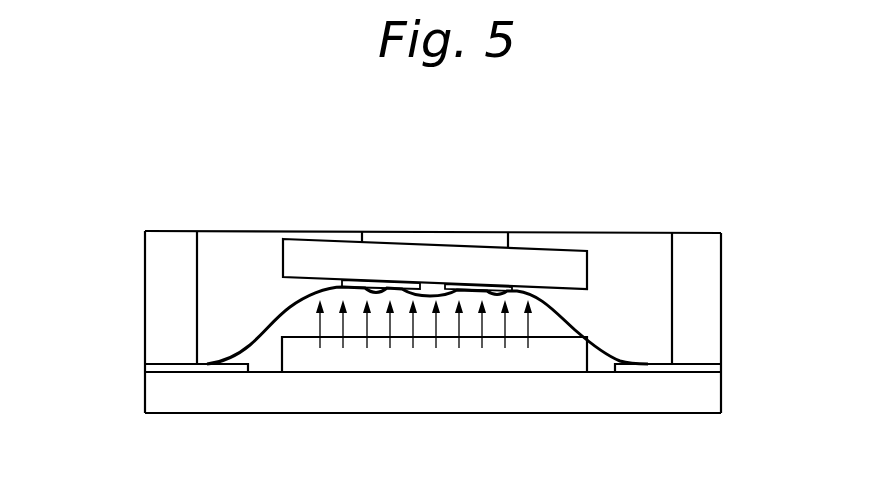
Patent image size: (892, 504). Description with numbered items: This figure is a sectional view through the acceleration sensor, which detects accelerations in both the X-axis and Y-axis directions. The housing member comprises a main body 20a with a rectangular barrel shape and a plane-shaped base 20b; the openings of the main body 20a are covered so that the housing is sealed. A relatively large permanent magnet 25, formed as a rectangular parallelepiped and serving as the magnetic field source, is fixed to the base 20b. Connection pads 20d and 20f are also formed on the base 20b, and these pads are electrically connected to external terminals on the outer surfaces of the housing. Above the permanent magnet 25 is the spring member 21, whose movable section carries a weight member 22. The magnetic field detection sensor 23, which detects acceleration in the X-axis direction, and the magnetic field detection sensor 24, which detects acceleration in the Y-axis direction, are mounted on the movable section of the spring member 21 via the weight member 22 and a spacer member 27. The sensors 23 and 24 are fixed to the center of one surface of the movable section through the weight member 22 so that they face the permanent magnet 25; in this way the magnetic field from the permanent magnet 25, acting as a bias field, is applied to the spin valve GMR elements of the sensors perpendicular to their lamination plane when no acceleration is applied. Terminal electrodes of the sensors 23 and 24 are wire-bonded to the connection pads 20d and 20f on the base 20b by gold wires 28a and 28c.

The main body 20a is at (157, 297).
The base 20b is at (674, 402).
The connection pad 20d is at (695, 368).
The connection pad 20f is at (157, 368).
The spring member 21 is at (590, 233).
The weight member 22 is at (566, 263).
The magnetic field detection sensor 23 is at (510, 286).
The magnetic field detection sensor 24 is at (360, 281).
The permanent magnet 25 is at (513, 362).
The spacer member 27 is at (476, 241).
The gold wire 28a is at (603, 350).
The gold wire 28c is at (263, 367).